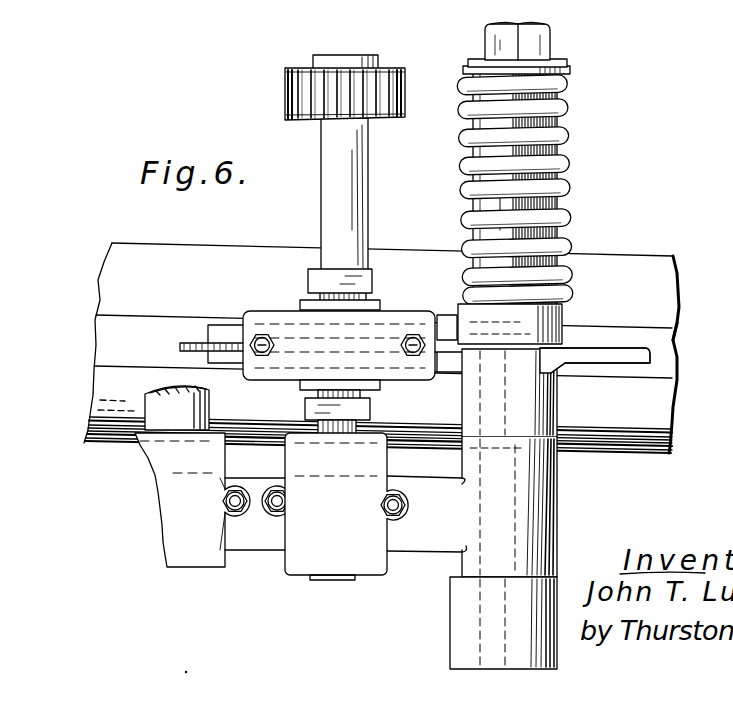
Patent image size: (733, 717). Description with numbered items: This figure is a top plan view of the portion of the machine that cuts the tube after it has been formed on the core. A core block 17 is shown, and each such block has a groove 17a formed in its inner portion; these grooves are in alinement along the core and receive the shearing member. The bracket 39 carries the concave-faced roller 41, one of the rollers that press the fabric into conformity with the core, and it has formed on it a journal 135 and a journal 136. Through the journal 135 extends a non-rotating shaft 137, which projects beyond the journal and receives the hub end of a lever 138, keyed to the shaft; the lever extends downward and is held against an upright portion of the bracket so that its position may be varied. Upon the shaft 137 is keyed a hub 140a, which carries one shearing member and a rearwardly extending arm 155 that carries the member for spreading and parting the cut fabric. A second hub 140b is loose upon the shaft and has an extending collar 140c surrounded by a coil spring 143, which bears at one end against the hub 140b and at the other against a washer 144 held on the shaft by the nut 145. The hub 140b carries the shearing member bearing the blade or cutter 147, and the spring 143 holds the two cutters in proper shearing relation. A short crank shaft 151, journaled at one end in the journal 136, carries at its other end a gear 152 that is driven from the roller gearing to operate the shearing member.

The core block 17 is at (381, 348).
The groove 17a is at (686, 339).
The bracket 39 is at (427, 555).
The roller 41 is at (232, 358).
The journal 135 is at (556, 477).
The journal 136 is at (285, 560).
The non-rotating shaft 137 is at (540, 153).
The lever 138 is at (452, 627).
The hub 140a is at (558, 418).
The hub 140b is at (568, 314).
The collar 140c is at (565, 204).
The coil spring 143 is at (572, 108).
The washer 144 is at (571, 65).
The nut 145 is at (545, 35).
The blade or cutter 147 is at (233, 341).
The crank shaft 151 is at (354, 276).
The gear 152 is at (402, 82).
The rearwardly extending arm 155 is at (641, 360).